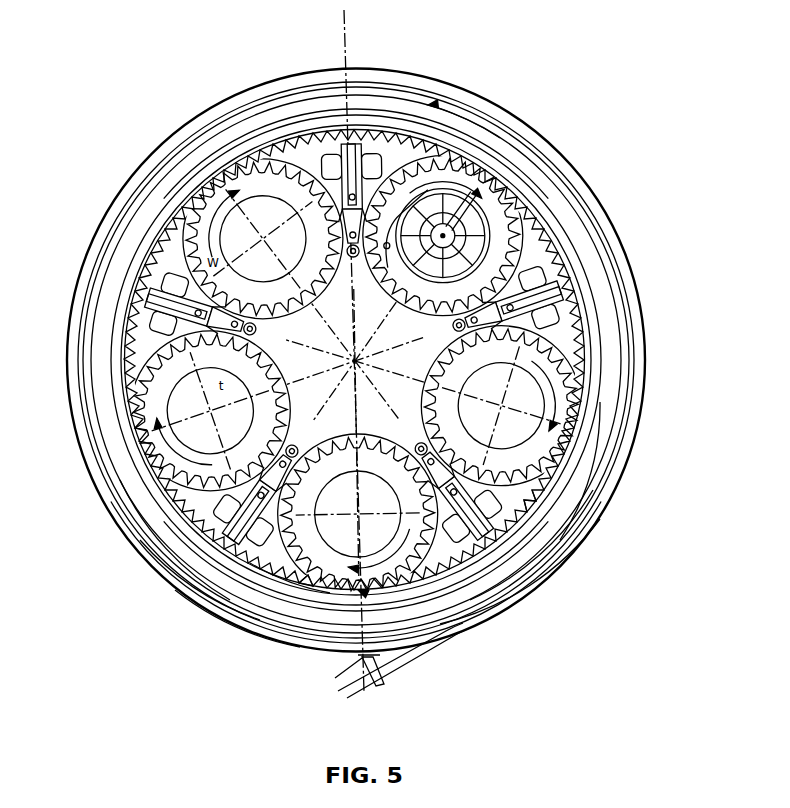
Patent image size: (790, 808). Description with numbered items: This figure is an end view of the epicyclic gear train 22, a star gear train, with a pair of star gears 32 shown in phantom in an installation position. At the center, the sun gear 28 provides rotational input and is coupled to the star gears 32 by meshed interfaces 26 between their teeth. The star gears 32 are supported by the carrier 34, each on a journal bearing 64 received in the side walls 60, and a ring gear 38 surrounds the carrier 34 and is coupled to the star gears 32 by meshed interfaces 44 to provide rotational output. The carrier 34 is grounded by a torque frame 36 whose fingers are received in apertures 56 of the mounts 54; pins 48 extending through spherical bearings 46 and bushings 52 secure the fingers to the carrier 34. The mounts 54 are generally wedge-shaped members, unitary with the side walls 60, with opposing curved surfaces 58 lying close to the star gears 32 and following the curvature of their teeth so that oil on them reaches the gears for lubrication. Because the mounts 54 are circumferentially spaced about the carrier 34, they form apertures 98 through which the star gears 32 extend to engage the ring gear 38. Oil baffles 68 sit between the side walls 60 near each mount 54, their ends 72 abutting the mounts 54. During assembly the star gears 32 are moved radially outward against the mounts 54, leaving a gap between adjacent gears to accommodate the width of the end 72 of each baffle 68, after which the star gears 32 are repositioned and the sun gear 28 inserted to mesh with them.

The epicyclic gear train 22 is at (604, 124).
The meshed interfaces 26 is at (456, 406).
The sun gear 28 is at (357, 393).
The star gears 32 is at (593, 448).
The carrier 34 is at (300, 580).
The torque frame 36 is at (562, 555).
The ring gear 38 is at (452, 150).
The meshed interfaces 44 is at (582, 388).
The spherical bearings 46 is at (505, 612).
The pins 48 is at (549, 578).
The bushings 52 is at (480, 478).
The mounts 54 is at (157, 556).
The apertures 56 is at (183, 588).
The curved surfaces 58 is at (243, 622).
The side walls 60 is at (442, 638).
The journal bearing 64 is at (360, 537).
The oil baffles 68 is at (315, 488).
The ends 72 is at (170, 398).
The apertures 98 is at (316, 585).